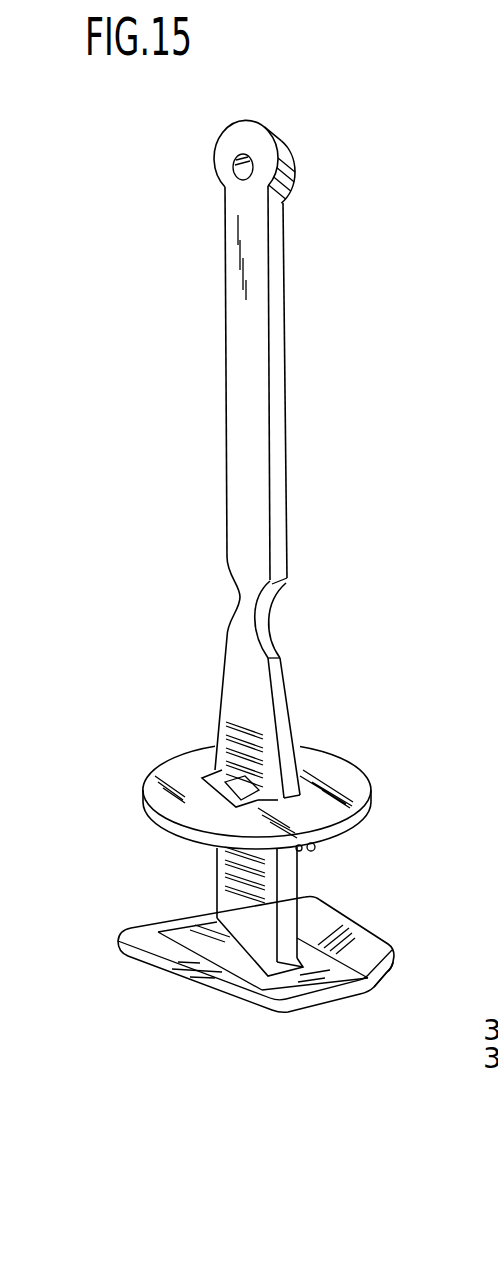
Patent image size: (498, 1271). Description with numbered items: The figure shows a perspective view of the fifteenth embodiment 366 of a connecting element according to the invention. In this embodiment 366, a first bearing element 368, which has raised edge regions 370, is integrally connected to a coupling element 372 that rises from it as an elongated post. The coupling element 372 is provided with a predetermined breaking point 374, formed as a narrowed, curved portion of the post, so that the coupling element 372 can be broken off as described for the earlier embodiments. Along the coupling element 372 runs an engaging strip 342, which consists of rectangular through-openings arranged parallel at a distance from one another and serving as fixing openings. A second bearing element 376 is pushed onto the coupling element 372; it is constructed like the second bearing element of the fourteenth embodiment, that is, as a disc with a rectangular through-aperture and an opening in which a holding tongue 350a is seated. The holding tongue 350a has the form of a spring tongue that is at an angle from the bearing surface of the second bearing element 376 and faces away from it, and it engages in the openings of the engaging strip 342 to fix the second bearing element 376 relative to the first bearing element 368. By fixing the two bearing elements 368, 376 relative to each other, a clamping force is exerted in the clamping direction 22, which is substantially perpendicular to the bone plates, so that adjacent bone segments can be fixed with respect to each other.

The fifteenth embodiment 366 is at (340, 478).
The clamping direction 22 is at (177, 556).
The predetermined breaking point 374 is at (262, 618).
The coupling element 372 is at (268, 689).
The second bearing element 376 is at (354, 789).
The holding tongue 350a is at (202, 782).
The engaging strip 342 is at (243, 886).
The first bearing element 368 is at (323, 1014).
The raised edge regions 370 is at (363, 940).